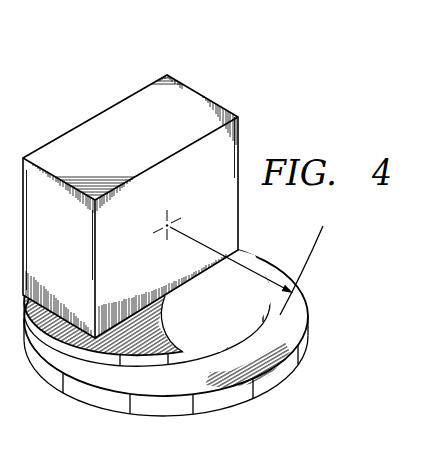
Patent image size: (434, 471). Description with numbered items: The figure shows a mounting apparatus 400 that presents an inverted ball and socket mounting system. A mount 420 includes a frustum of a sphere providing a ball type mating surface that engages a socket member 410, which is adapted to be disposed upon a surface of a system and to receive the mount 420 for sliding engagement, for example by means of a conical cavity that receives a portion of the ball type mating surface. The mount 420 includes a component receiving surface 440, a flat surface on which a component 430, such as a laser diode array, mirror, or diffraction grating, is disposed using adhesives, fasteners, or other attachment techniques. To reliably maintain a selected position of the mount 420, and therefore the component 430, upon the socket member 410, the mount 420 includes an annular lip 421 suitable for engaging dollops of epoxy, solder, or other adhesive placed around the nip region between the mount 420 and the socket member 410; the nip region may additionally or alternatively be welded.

The mounting apparatus 400 is at (350, 282).
The socket member 410 is at (283, 367).
The mount 420 is at (168, 363).
The annular lip 421 is at (138, 353).
The component 430 is at (77, 140).
The component receiving surface 440 is at (193, 330).